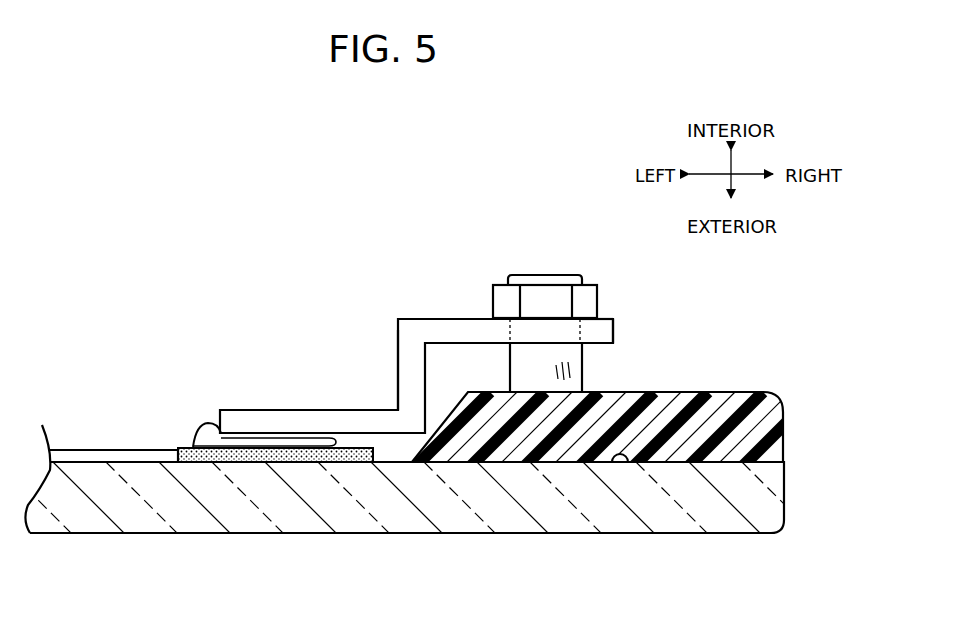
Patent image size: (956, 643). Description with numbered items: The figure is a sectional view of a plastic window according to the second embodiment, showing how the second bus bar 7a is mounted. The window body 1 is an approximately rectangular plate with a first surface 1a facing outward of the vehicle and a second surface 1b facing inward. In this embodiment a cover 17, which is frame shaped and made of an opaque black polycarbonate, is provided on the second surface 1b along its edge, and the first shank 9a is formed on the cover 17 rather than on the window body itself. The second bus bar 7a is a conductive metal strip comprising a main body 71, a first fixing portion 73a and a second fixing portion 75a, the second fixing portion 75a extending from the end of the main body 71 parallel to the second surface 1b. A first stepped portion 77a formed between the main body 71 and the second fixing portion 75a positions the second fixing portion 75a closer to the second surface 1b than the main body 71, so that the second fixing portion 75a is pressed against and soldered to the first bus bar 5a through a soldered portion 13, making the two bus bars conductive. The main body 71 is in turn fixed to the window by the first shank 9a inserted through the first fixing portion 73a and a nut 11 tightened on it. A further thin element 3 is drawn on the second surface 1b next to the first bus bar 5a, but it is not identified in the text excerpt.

The window body 1 is at (735, 512).
The first surface 1a is at (663, 531).
The second surface 1b is at (618, 451).
The layer on substrate 3 is at (115, 450).
The first bus bar 5a is at (193, 440).
The soldered portions 13 is at (232, 440).
The cover 17 is at (734, 400).
The second bus bar 7a is at (410, 310).
The main body 71 is at (449, 329).
The first fixing portion 73a is at (568, 332).
The second fixing portion 75a is at (272, 424).
The first stepped portion 77a is at (407, 368).
The first shank 9a is at (582, 380).
The nut 11 is at (588, 304).